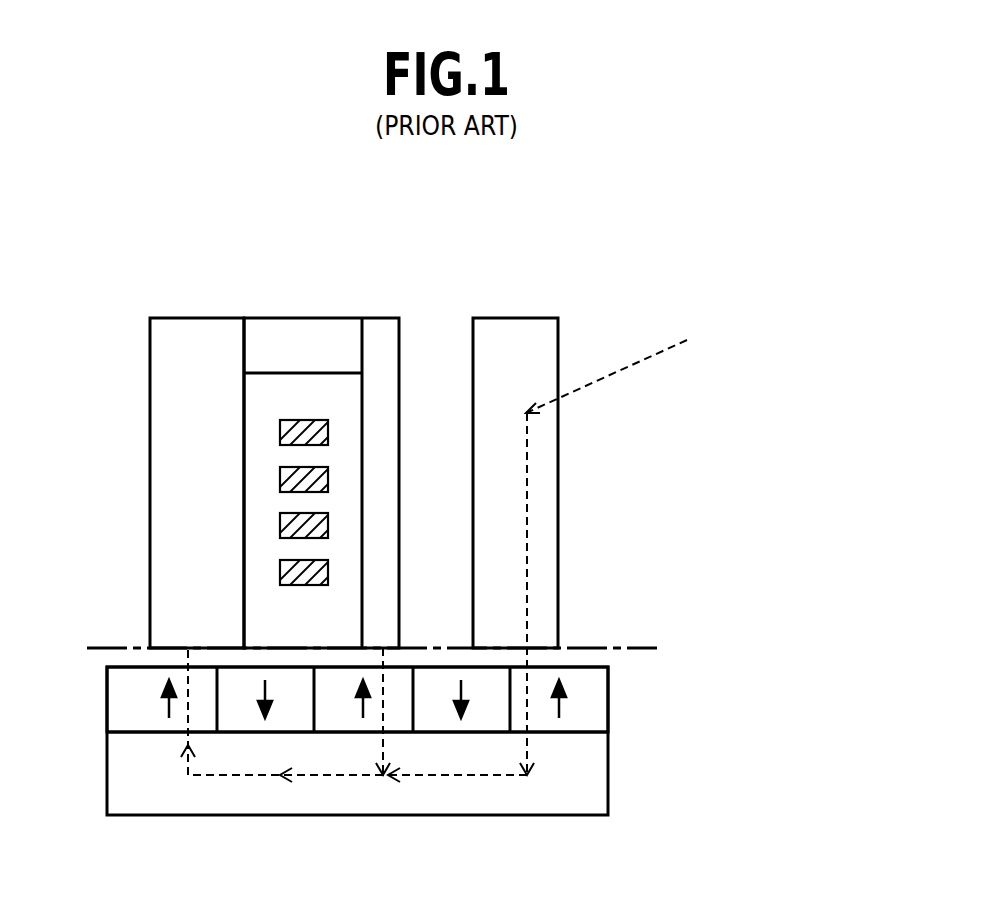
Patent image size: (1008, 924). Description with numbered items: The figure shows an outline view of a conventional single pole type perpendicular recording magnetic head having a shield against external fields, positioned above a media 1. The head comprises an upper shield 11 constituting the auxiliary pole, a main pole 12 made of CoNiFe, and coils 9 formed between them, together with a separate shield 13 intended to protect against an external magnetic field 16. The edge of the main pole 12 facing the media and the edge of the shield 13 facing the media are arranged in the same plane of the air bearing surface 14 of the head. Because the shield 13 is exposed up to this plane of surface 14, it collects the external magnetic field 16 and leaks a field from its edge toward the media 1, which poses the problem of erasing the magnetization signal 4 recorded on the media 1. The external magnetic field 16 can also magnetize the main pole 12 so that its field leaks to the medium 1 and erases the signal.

The media 1 is at (457, 703).
The magnetization signal 4 is at (327, 661).
The coils 9 is at (280, 481).
The upper shield 11 is at (196, 340).
The main pole 12 is at (378, 340).
The shield 13 is at (515, 340).
The air bearing surface 14 is at (632, 650).
The external magnetic field 16 is at (652, 355).